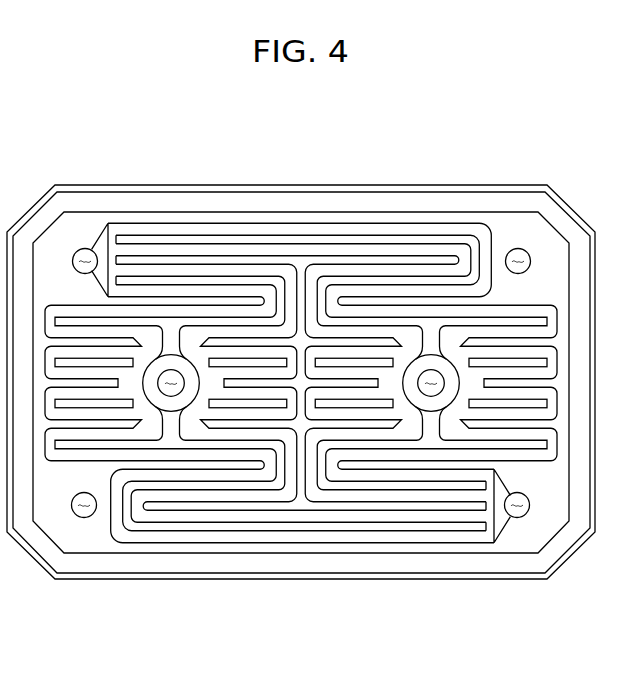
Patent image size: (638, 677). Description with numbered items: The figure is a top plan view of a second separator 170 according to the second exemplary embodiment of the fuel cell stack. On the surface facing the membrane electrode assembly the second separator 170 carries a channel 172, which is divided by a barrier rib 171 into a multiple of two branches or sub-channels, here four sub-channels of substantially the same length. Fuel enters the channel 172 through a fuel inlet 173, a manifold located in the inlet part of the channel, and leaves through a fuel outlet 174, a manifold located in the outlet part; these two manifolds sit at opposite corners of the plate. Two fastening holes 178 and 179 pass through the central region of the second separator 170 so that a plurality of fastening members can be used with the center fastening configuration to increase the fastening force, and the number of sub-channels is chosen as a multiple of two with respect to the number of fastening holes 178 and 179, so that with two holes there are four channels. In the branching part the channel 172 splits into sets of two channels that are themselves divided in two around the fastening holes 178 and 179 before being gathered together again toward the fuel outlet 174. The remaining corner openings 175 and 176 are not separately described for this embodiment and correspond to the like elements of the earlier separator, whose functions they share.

The second separator 170 is at (316, 114).
The barrier rib 171 is at (203, 241).
The channel 172 is at (146, 233).
The fuel inlet 173 is at (87, 248).
The fuel outlet 174 is at (517, 518).
The fastening hole 175 is at (518, 248).
The fastening hole 176 is at (84, 518).
The fastening hole 178 is at (173, 371).
The fastening hole 179 is at (429, 370).